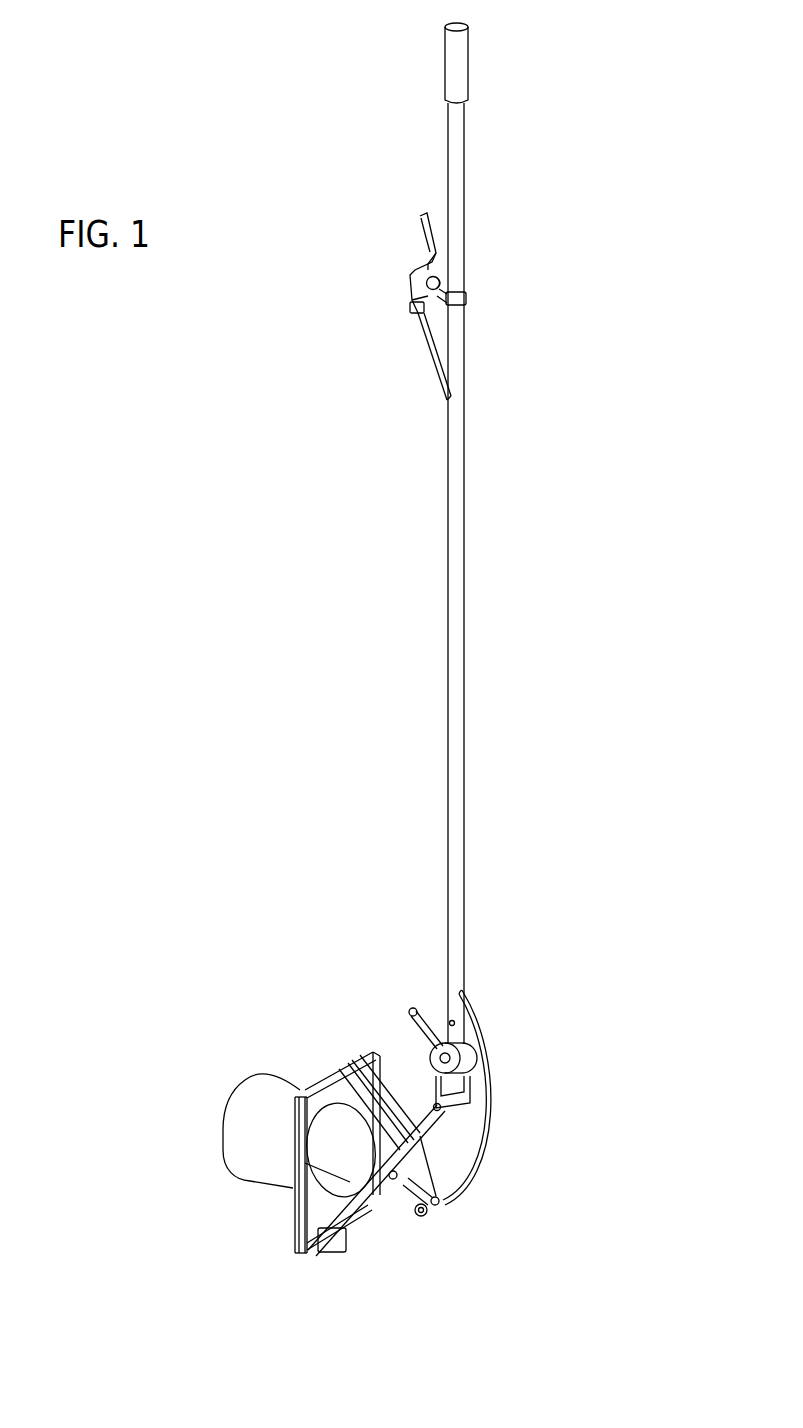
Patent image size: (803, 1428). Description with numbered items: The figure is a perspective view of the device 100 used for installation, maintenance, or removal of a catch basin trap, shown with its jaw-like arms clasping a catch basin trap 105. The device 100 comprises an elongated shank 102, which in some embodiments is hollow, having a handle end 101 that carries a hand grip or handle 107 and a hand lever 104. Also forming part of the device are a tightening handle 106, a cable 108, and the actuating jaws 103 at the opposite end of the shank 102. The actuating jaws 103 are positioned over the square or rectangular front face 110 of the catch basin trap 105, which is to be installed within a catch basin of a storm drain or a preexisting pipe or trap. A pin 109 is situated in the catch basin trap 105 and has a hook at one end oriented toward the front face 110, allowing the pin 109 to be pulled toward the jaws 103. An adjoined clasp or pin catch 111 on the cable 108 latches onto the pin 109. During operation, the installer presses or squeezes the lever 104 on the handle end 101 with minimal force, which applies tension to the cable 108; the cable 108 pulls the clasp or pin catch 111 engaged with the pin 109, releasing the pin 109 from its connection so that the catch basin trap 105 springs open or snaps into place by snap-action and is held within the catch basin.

The device 100 is at (240, 496).
The handle end 101 is at (462, 228).
The shank 102 is at (448, 583).
The actuating jaws 103 is at (338, 1077).
The lever 104 is at (425, 242).
The catch basin trap 105 is at (237, 1105).
The tightening handle 106 is at (412, 1012).
The handle 107 is at (468, 78).
The cable 108 is at (433, 352).
The pin 109 is at (290, 1190).
The front face 110 is at (318, 1222).
The clasp or pin catch 111 is at (297, 1243).